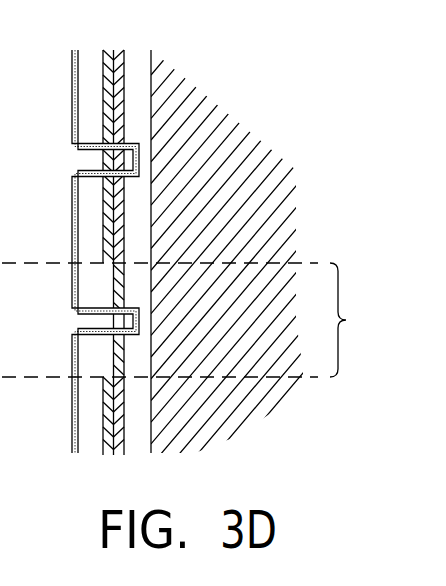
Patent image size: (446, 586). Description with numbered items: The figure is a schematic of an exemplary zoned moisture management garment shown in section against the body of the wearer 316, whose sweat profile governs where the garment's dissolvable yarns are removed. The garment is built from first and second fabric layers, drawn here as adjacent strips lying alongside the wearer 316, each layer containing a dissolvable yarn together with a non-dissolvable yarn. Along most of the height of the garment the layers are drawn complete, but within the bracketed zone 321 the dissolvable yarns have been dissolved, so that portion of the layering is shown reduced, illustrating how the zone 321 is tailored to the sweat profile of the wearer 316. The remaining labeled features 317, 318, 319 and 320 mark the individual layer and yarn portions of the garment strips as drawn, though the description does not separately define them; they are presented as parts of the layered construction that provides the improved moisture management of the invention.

The wearer 316 is at (244, 210).
The first layer 317 is at (124, 62).
The second layer 318 is at (103, 62).
The inner wall surface 319 is at (79, 441).
The wall 320 is at (72, 423).
The zone 321 is at (195, 320).